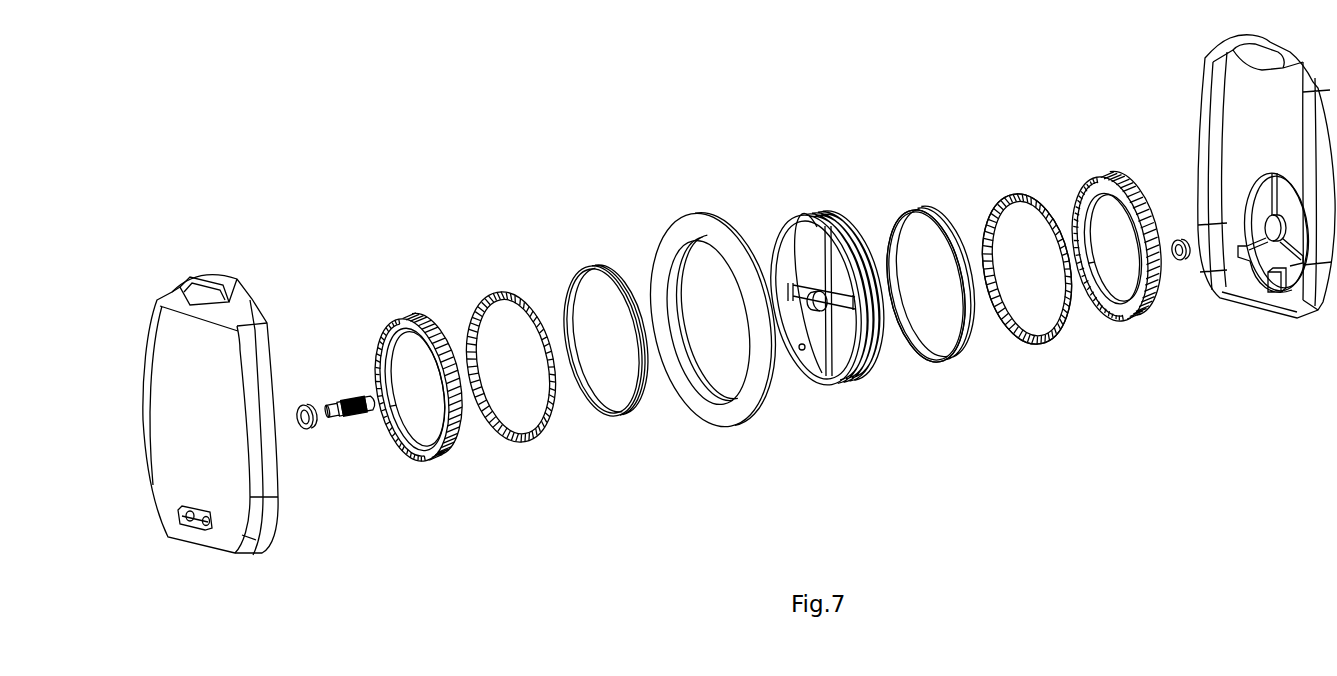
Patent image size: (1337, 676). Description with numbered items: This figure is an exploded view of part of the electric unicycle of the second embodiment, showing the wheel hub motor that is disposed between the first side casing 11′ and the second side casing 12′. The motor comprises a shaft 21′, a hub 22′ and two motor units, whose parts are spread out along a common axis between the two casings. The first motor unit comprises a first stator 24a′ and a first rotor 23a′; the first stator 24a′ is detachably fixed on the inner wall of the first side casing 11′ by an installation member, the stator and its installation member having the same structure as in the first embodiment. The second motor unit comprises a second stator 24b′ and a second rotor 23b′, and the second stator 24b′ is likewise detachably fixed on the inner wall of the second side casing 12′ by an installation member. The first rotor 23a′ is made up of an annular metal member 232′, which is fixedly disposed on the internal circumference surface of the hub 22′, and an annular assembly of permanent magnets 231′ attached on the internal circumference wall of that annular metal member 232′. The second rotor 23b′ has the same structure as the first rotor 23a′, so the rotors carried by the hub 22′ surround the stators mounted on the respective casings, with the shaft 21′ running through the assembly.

The first side casing 11′ is at (1243, 123).
The second side casing 12′ is at (247, 340).
The shaft 21′ is at (350, 400).
The hub 22′ is at (810, 226).
The first rotor 23a′ is at (997, 88).
The annular assembly of permanent magnets 231′ is at (1013, 193).
The annular metal member 232′ is at (918, 210).
The second rotor 23b′ is at (603, 267).
The first stator 24a′ is at (1117, 177).
The second stator 24b′ is at (437, 322).